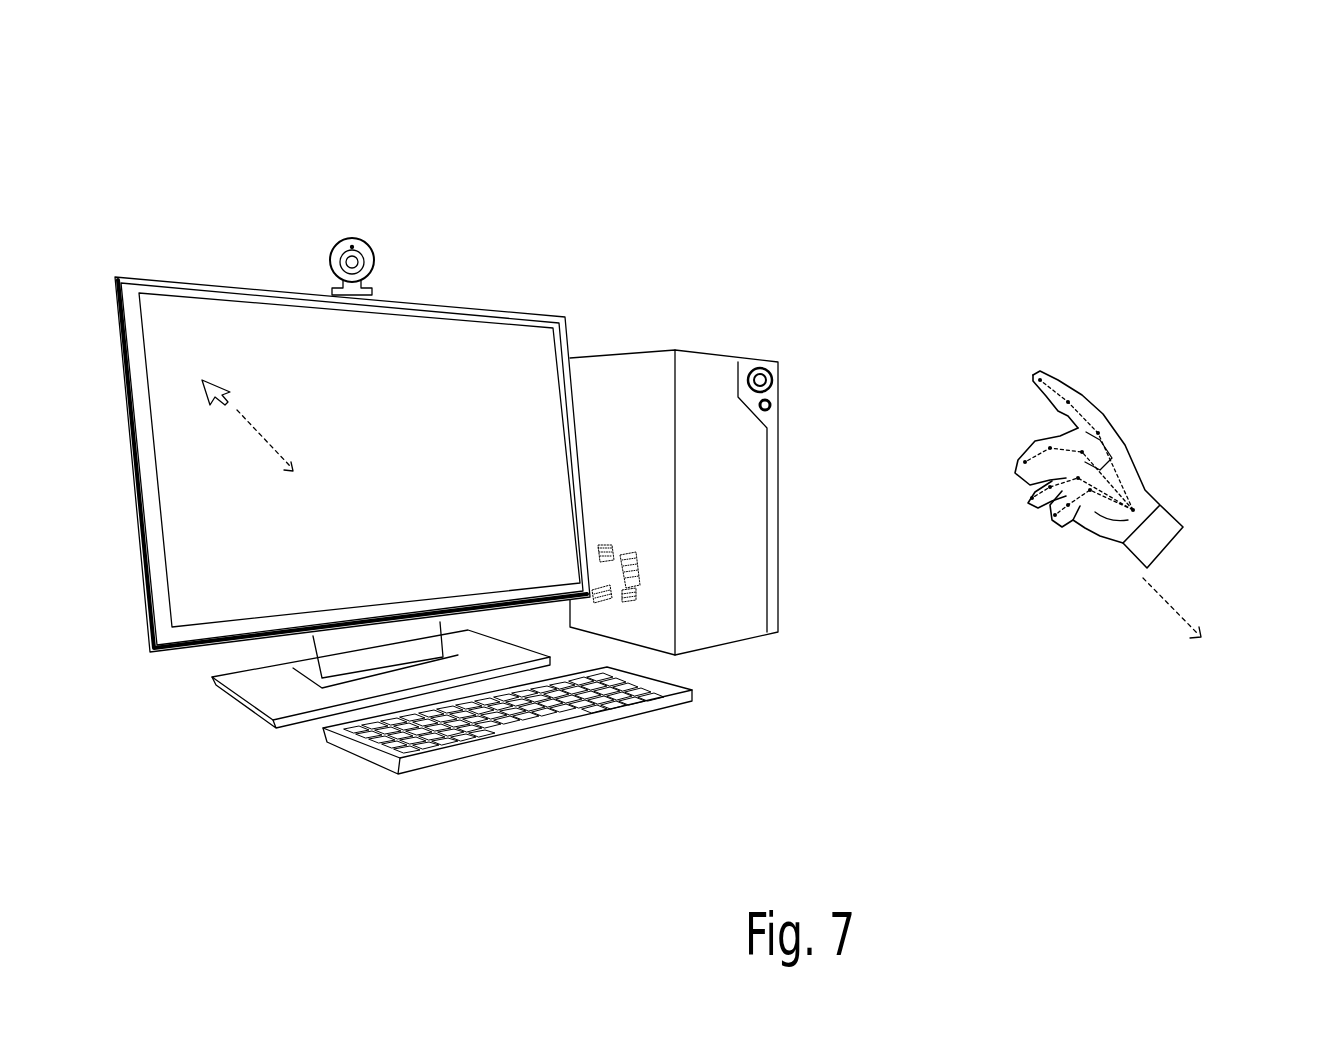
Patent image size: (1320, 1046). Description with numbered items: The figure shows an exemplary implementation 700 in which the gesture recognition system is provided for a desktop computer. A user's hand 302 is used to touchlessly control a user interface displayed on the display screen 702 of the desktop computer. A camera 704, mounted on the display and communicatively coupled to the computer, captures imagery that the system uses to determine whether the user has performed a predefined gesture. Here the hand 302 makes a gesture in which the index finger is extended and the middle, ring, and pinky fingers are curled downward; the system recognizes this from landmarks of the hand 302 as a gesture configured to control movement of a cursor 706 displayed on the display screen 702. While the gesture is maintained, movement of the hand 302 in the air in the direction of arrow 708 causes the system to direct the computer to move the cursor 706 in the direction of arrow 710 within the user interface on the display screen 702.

The exemplary implementation 700 is at (192, 114).
The display screen 702 is at (545, 315).
The camera 704 is at (352, 238).
The cursor 706 is at (217, 380).
The arrow 710 is at (257, 435).
The hand 302 is at (1165, 523).
The arrow 708 is at (1180, 612).